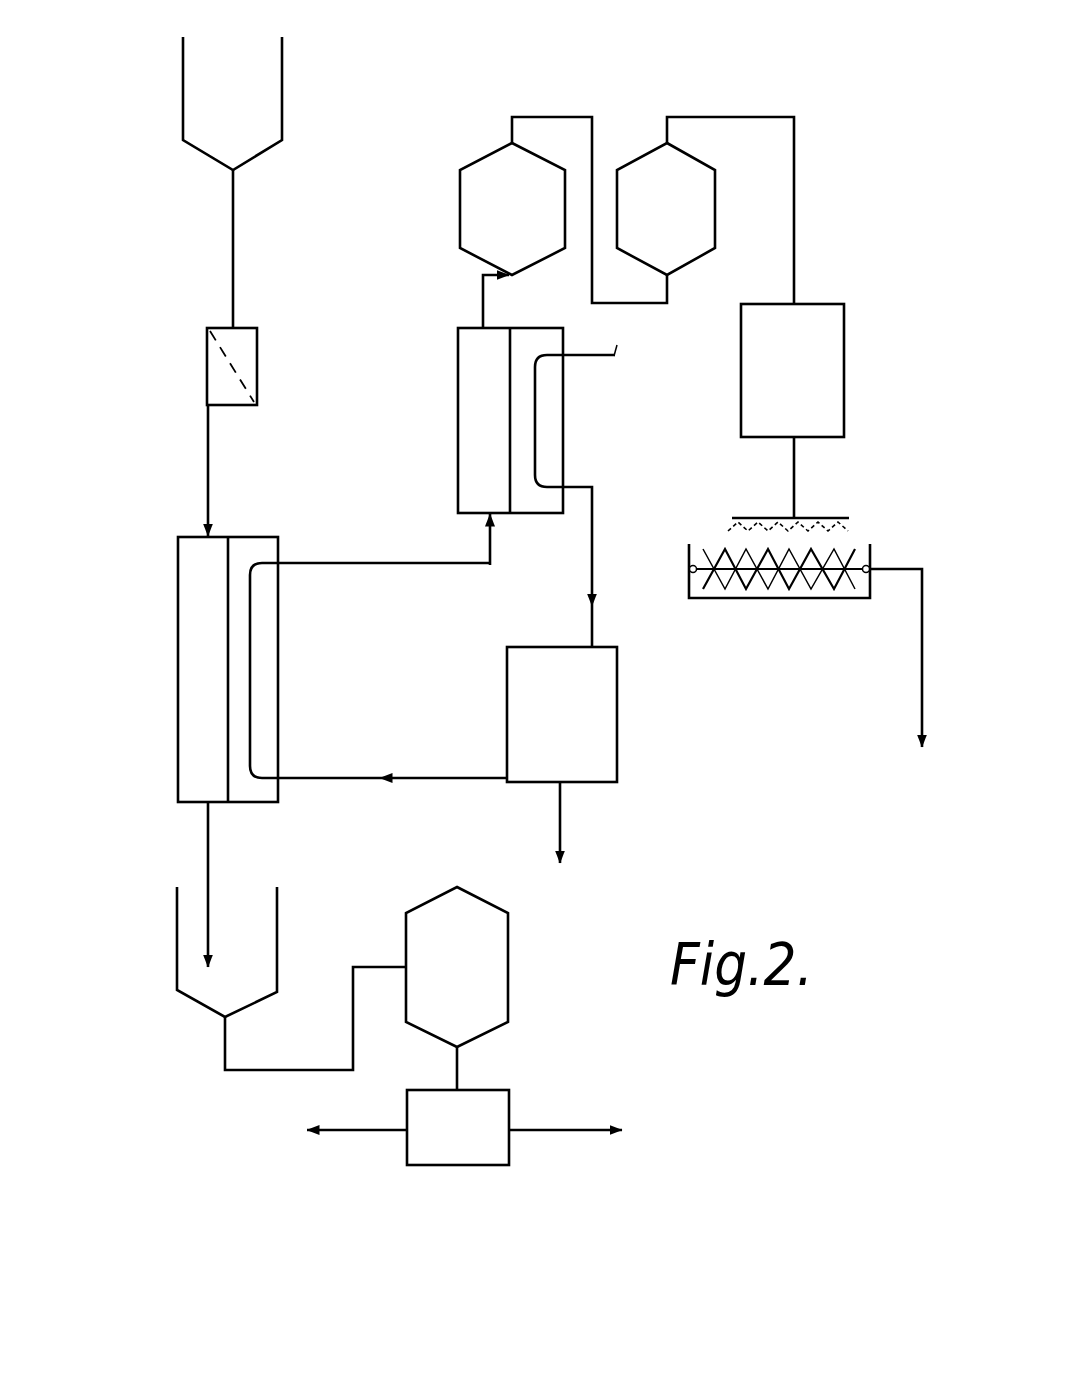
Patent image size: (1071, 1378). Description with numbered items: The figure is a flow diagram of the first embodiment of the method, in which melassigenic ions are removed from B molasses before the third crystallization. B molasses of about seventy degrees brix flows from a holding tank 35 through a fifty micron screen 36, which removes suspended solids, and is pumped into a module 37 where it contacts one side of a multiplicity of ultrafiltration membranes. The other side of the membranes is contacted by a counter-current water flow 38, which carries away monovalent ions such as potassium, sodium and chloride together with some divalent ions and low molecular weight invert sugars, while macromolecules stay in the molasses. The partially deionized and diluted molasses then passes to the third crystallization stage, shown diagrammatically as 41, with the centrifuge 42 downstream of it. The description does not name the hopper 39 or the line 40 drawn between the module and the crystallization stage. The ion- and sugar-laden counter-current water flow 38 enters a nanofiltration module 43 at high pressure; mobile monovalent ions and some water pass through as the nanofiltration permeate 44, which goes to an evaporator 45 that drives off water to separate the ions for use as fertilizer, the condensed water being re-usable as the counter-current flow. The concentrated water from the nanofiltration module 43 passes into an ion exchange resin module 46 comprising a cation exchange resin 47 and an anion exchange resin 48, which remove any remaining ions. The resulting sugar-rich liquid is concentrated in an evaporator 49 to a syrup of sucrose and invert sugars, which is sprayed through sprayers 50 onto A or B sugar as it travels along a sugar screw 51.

The holding tank 35 is at (183, 74).
The 50 micron screen 36 is at (207, 355).
The module 37 is at (178, 600).
The counter-current water flow 38 is at (250, 665).
The product hopper 39 is at (177, 917).
The vent line 40 is at (350, 1012).
The third crystallization stage 41 is at (406, 930).
The centrifuge 42 is at (427, 1173).
The nanofiltration module 43 is at (458, 406).
The nanofiltration permeate 44 is at (604, 358).
The evaporator 45 is at (617, 710).
The ion exchange resin module 46 is at (620, 98).
The cation exchange resin 47 is at (487, 157).
The anion exchange resin 48 is at (717, 192).
The evaporator 49 is at (845, 350).
The sprayers 50 is at (830, 518).
The sugar screw 51 is at (718, 568).